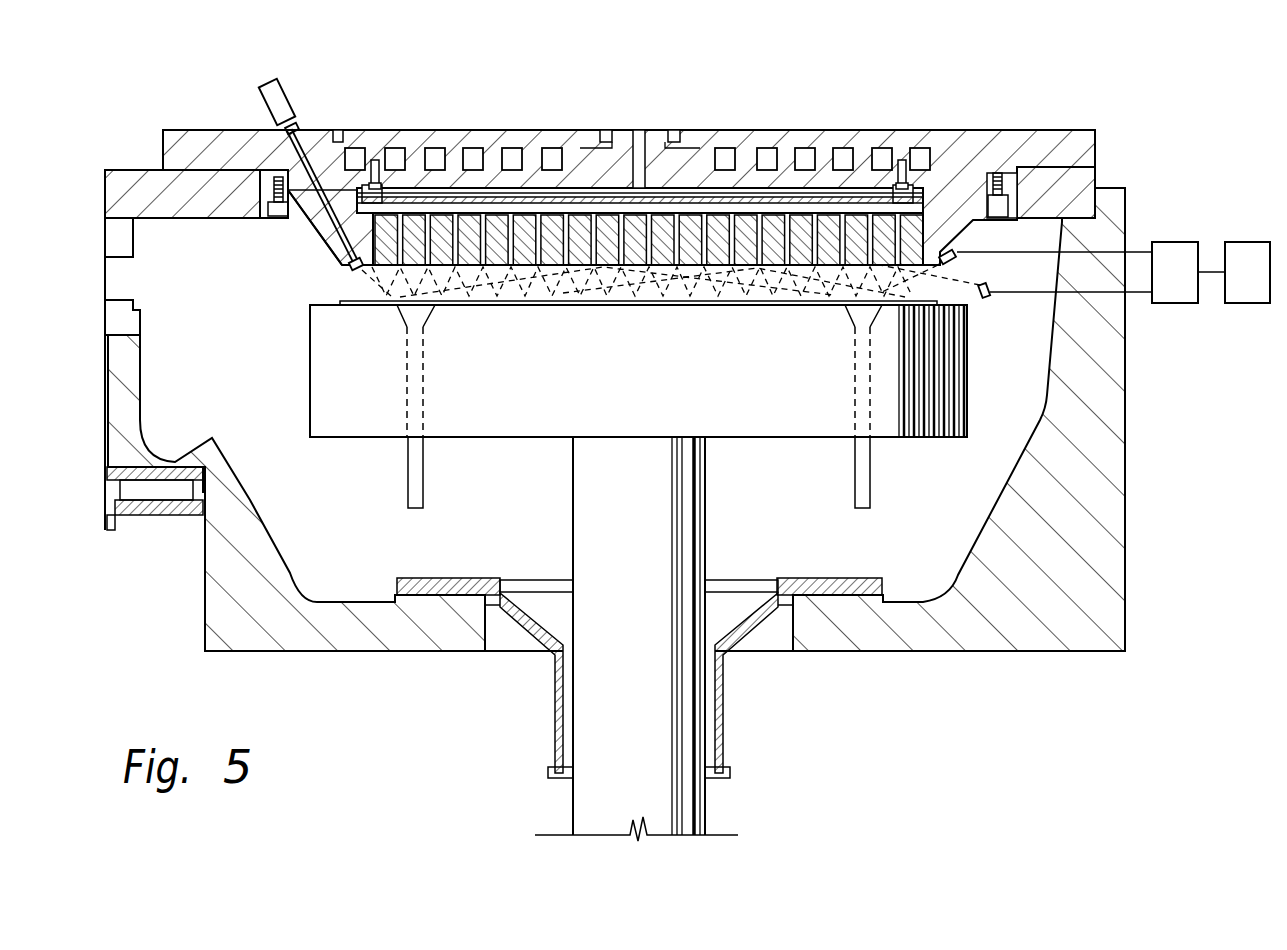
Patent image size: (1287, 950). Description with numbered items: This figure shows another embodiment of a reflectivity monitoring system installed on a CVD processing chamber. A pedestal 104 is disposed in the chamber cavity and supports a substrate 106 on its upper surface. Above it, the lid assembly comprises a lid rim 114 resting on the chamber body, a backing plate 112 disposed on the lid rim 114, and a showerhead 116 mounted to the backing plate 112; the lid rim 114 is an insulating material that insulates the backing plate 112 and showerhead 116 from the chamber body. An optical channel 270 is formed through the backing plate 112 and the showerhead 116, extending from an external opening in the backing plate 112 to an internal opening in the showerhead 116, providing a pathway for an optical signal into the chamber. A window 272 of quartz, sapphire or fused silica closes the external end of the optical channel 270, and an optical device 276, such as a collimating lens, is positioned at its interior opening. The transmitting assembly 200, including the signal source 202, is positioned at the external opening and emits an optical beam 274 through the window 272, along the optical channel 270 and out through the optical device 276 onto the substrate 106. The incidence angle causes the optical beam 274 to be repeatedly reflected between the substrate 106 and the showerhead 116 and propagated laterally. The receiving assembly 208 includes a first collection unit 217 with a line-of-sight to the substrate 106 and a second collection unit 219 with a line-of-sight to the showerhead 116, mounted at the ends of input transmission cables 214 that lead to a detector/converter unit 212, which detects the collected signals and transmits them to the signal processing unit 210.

The transmitting assembly 200 is at (352, 160).
The signal source 202 is at (298, 96).
The window 272 is at (304, 126).
The optical channel 270 is at (333, 221).
The optical device 276 is at (350, 269).
The optical beam 274 is at (367, 283).
The backing plate 112 is at (240, 130).
The lid rim 114 is at (153, 170).
The showerhead 116 is at (330, 247).
The substrate 106 is at (645, 305).
The pedestal 104 is at (518, 440).
The input transmission cables 214 is at (1037, 252).
The first collection unit 217 is at (957, 258).
The second collection unit 219 is at (980, 298).
The detector/converter unit 212 is at (1170, 242).
The signal processing unit 210 is at (1244, 242).
The receiving assembly 208 is at (1109, 275).